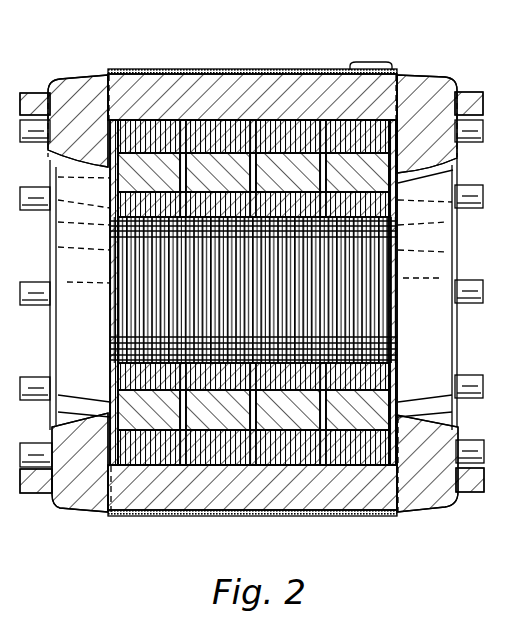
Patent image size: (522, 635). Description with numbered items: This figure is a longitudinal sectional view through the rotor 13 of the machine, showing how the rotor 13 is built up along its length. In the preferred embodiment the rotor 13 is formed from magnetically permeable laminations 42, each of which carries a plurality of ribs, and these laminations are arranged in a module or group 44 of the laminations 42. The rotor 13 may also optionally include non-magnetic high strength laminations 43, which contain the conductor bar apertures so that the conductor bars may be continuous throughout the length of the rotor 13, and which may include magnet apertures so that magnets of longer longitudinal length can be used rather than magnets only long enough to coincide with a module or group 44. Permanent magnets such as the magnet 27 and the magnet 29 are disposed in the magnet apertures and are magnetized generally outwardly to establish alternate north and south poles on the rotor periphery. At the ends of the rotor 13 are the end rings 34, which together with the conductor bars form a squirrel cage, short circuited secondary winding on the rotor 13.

The rotor 13 is at (275, 88).
The magnet 27 is at (365, 186).
The magnet 29 is at (365, 421).
The end ring 34 is at (63, 92).
The magnetically permeable lamination 42 is at (253, 236).
The non-magnetic high strength lamination 43 is at (182, 70).
The module or group of laminations 44 is at (380, 62).